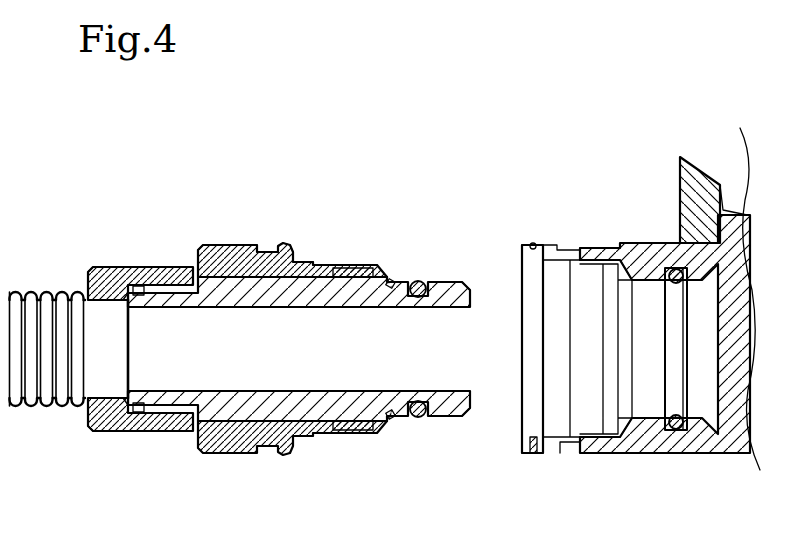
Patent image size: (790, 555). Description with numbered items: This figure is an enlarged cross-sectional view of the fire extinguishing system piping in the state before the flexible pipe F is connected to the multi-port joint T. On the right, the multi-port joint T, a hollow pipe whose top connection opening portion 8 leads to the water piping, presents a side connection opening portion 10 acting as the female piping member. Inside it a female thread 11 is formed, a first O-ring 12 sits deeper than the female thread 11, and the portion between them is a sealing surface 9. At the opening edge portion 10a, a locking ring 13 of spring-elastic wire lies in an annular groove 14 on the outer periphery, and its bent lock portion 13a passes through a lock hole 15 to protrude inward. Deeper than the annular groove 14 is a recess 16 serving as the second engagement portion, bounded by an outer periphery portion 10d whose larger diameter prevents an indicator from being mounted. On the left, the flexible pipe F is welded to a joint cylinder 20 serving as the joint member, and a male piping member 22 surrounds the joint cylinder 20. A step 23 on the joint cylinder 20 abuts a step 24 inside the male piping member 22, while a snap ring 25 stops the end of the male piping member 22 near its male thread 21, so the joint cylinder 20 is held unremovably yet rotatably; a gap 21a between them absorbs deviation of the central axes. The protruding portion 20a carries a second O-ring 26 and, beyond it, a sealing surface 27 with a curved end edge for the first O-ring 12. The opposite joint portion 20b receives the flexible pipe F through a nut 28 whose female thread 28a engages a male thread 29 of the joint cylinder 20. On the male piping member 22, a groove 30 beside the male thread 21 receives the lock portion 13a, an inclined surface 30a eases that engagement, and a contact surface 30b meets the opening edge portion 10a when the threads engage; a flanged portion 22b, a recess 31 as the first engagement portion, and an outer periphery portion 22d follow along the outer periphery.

The flexible pipe F is at (47, 287).
The multi-port joint T is at (680, 210).
The connection opening portion 8 is at (735, 195).
The sealing surface 9 is at (653, 287).
The connection opening portion 10 is at (600, 246).
The opening edge portion 10a is at (523, 250).
The outer periphery portion 10d is at (655, 262).
The female thread 11 is at (628, 436).
The first O-ring 12 is at (678, 432).
The locking ring 13 is at (533, 243).
The lock portion 13a is at (530, 440).
The annular groove 14 is at (522, 275).
The lock hole 15 is at (525, 460).
The recess 16 is at (566, 453).
The joint cylinder 20 is at (230, 416).
The protruding portion 20a is at (440, 421).
The joint portion 20b is at (157, 265).
The male thread 21 is at (352, 433).
The gap 21a is at (370, 268).
The male piping member 22 is at (203, 245).
The flanged portion 22b is at (288, 243).
The outer periphery portion 22d is at (220, 245).
The step 23 is at (291, 410).
The step 24 is at (292, 412).
The snap ring 25 is at (393, 422).
The second O-ring 26 is at (418, 281).
The sealing surface 27 is at (448, 282).
The nut 28 is at (113, 265).
The female thread 28a is at (150, 432).
The male thread 29 is at (173, 432).
The groove 30 is at (298, 262).
The inclined surface 30a is at (320, 265).
The contact surface 30b is at (303, 440).
The recess 31 is at (263, 250).